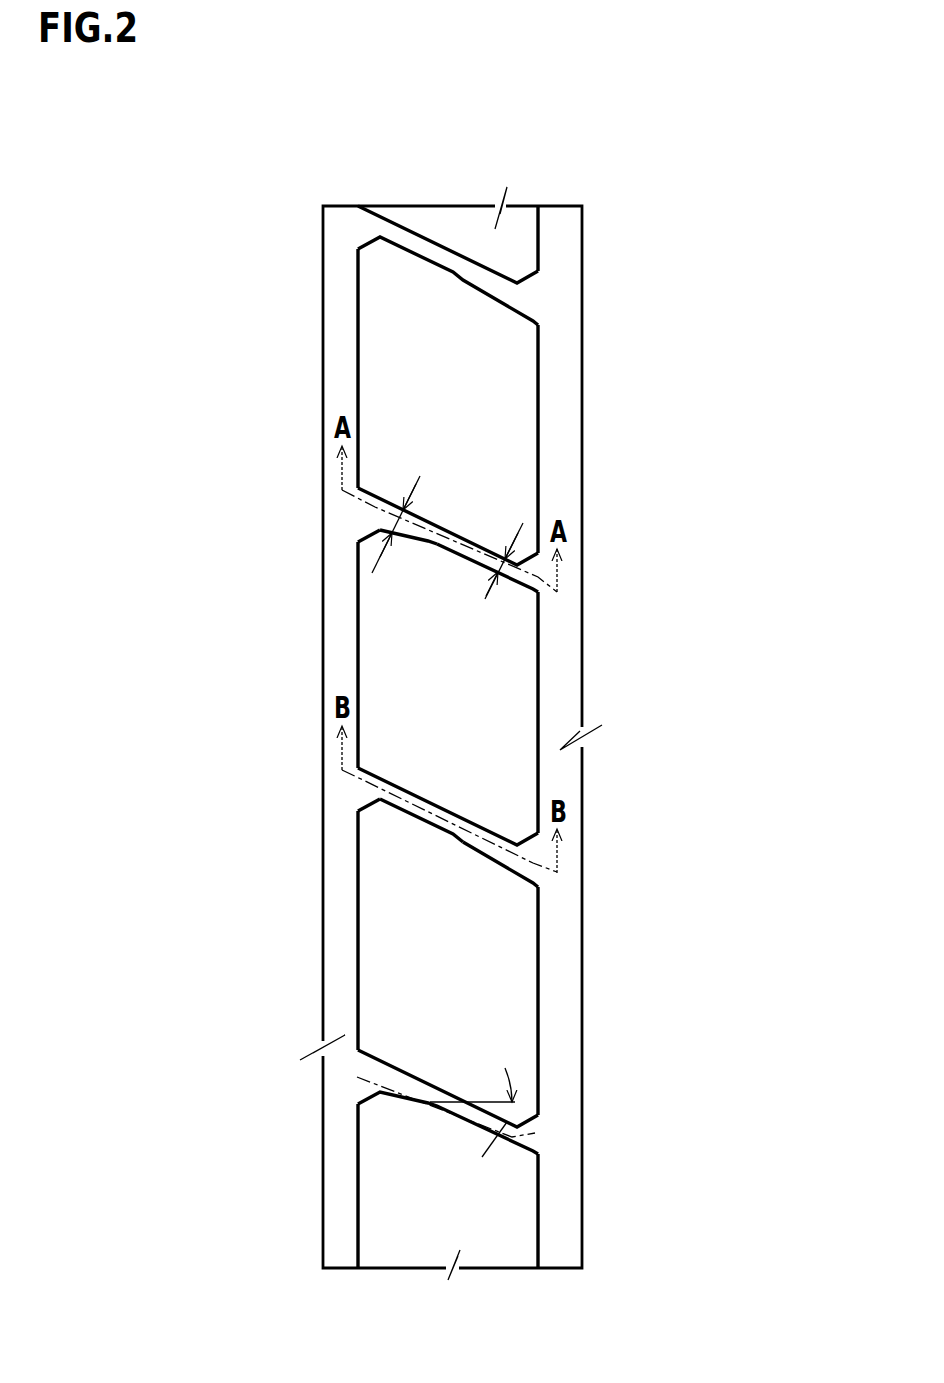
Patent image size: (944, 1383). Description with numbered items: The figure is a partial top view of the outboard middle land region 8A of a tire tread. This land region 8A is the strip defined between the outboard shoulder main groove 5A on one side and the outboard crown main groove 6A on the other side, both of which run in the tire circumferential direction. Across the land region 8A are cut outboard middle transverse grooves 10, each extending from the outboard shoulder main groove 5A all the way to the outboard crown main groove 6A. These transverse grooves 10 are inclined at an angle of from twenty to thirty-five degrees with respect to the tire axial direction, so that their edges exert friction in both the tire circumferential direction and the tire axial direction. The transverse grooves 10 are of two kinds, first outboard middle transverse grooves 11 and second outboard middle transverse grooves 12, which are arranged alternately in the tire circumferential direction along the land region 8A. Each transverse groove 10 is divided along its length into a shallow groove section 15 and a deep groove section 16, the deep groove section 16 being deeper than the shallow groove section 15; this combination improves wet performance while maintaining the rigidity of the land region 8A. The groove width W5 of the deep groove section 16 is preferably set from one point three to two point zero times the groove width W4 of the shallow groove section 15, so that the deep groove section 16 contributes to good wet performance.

The outboard shoulder main groove 5A is at (340, 260).
The outboard crown main groove 6A is at (557, 260).
The outboard middle land region 8A is at (449, 238).
The outboard middle transverse groove 10 is at (320, 710).
The first outboard middle transverse groove 11 is at (218, 591).
The second outboard middle transverse groove 12 is at (444, 265).
The shallow groove section 15 is at (473, 556).
The deep groove section 16 is at (409, 537).
The groove width of the shallow groove section W4 is at (513, 583).
The groove width of the deep groove section W5 is at (394, 520).